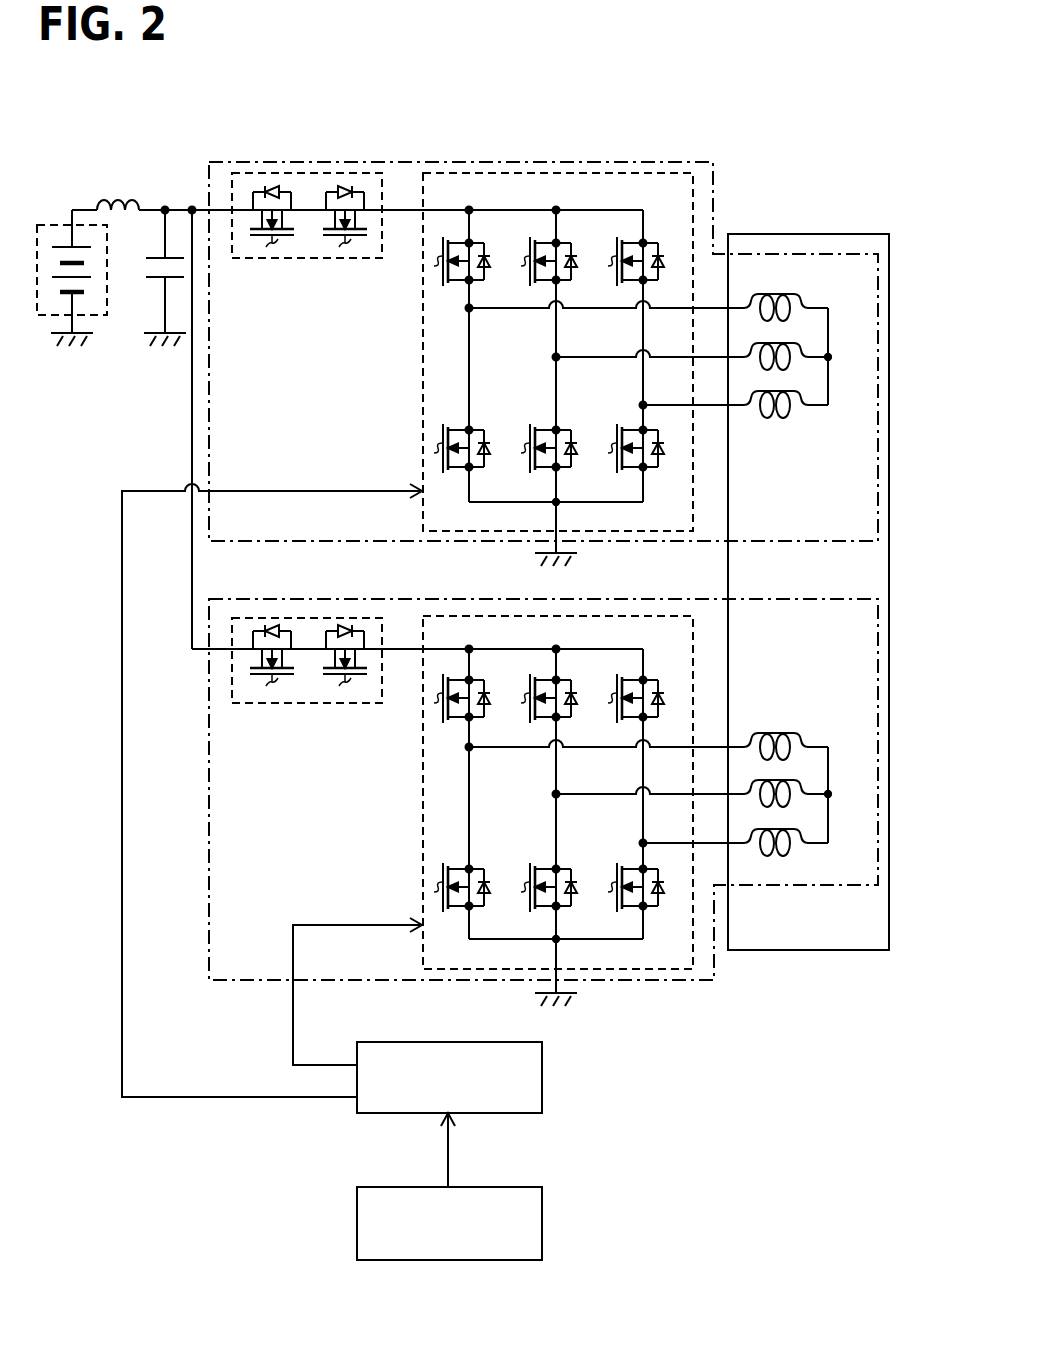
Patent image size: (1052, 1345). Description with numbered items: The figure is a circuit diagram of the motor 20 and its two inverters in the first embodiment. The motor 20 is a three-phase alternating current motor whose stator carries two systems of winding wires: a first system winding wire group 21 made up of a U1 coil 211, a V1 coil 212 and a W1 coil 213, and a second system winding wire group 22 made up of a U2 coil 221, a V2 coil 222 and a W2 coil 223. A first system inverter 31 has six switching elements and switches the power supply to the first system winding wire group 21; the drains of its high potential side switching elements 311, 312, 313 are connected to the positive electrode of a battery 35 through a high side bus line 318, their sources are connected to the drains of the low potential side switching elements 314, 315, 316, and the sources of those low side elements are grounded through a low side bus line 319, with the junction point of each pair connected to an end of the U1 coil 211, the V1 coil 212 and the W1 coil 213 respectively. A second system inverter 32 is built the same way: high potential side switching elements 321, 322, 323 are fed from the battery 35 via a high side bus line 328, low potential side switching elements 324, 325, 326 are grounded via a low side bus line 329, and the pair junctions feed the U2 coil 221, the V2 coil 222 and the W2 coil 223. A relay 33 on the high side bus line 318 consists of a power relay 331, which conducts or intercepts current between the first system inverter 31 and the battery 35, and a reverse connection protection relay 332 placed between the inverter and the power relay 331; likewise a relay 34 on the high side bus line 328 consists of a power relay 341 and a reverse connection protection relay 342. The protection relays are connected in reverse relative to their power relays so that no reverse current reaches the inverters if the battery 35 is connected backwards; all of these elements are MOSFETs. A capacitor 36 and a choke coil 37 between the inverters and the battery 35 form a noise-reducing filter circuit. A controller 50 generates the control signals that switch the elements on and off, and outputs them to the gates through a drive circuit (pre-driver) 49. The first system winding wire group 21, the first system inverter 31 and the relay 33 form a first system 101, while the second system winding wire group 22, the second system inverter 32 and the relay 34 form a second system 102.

The motor 20 is at (841, 234).
The first system winding wire group 21 is at (775, 430).
The U1 coil 211 is at (798, 292).
The V1 coil 212 is at (802, 343).
The W1 coil 213 is at (798, 392).
The second system winding wire group 22 is at (773, 715).
The U2 coil 221 is at (800, 731).
The V2 coil 222 is at (802, 780).
The W2 coil 223 is at (798, 829).
The first system inverter 31 is at (445, 173).
The second system inverter 32 is at (422, 855).
The relay 33 is at (243, 260).
The relay 34 is at (244, 705).
The battery 35 is at (54, 223).
The capacitor 36 is at (153, 278).
The choke coil 37 is at (115, 195).
The drive circuit (pre-driver) 49 is at (545, 1075).
The controller 50 is at (545, 1225).
The first system 101 is at (218, 160).
The second system 102 is at (212, 980).
The high potential side switching element 311 is at (489, 270).
The high potential side switching element 312 is at (576, 270).
The high potential side switching element 313 is at (647, 242).
The low potential side switching element 314 is at (476, 429).
The low potential side switching element 315 is at (563, 429).
The low potential side switching element 316 is at (648, 469).
The high side bus line 318 is at (512, 209).
The low side bus line 319 is at (605, 504).
The high potential side switching element 321 is at (461, 720).
The high potential side switching element 322 is at (576, 706).
The high potential side switching element 323 is at (651, 679).
The low potential side switching element 324 is at (476, 866).
The low potential side switching element 325 is at (563, 866).
The low potential side switching element 326 is at (648, 907).
The high side bus line 328 is at (505, 648).
The low side bus line 329 is at (605, 941).
The power relay 331 is at (275, 191).
The reverse connection protection relay 332 is at (347, 191).
The power relay 341 is at (245, 631).
The reverse connection protection relay 342 is at (320, 631).